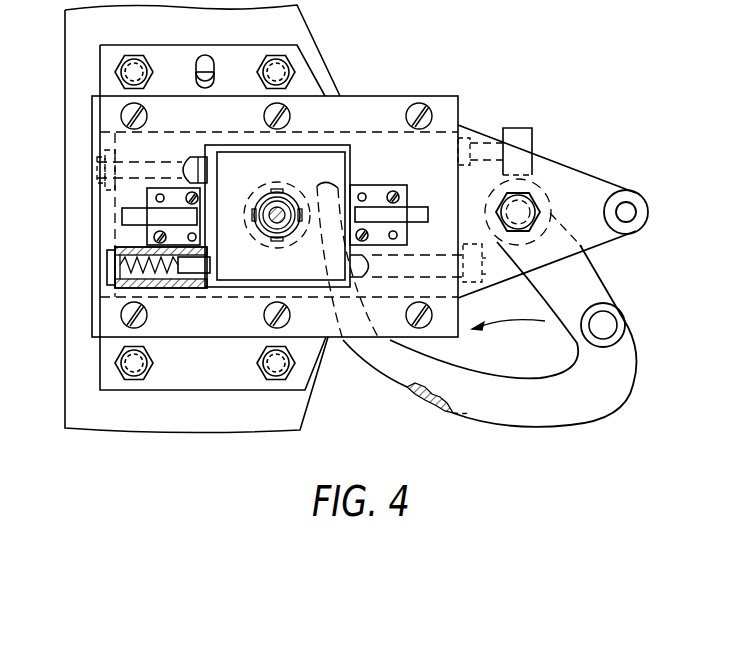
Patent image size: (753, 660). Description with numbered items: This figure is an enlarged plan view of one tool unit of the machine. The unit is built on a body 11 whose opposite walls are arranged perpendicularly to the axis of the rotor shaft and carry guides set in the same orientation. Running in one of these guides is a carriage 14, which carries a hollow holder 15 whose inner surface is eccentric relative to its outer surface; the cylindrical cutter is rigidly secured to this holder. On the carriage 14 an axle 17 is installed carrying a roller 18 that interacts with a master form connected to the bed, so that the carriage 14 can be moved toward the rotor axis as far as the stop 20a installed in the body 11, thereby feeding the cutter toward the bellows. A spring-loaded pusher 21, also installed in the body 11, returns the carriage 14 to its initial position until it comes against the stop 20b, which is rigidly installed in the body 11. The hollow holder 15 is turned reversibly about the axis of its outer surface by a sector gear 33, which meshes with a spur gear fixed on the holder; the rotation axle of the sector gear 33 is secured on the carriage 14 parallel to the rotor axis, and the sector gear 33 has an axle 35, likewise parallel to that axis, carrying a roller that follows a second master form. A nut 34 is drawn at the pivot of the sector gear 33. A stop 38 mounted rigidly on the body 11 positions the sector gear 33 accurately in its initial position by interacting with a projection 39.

The body 11 is at (240, 378).
The carriage 14 is at (601, 190).
The hollow holder 15 is at (286, 206).
The axle 17 is at (637, 212).
The roller 18 is at (641, 192).
The stop 20a is at (207, 170).
The stop 20b is at (351, 290).
The spring-loaded pusher 21 is at (208, 258).
The sector gear 33 is at (580, 405).
The nut 34 is at (532, 211).
The axle 35 is at (604, 340).
The stop 38 is at (495, 169).
The projection 39 is at (520, 135).